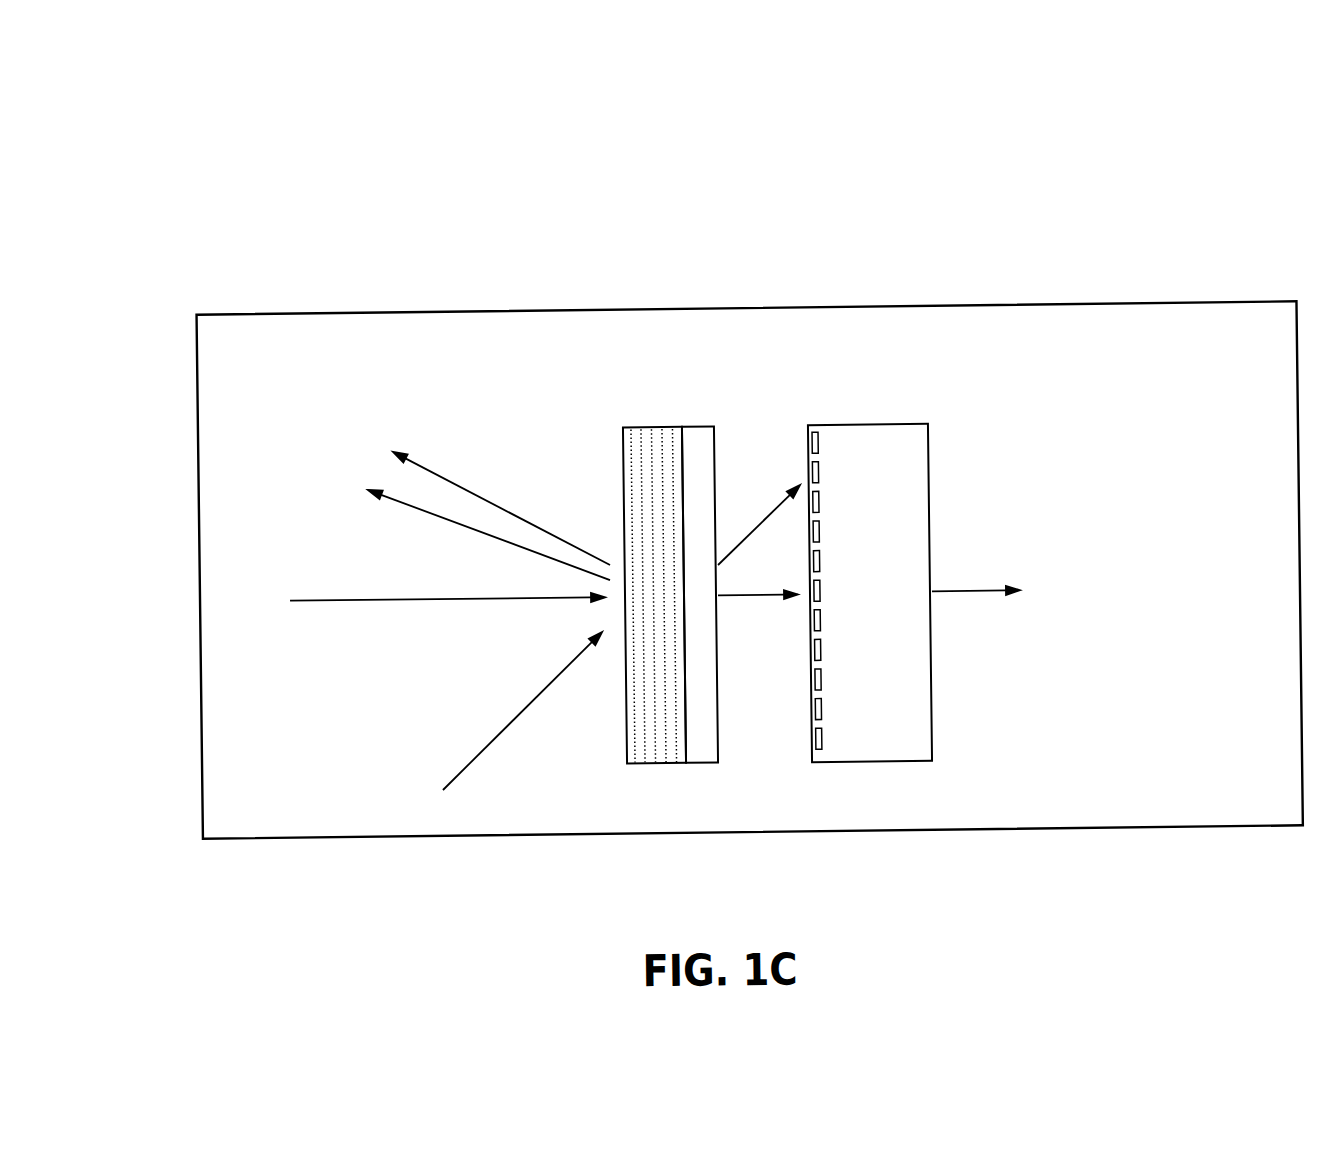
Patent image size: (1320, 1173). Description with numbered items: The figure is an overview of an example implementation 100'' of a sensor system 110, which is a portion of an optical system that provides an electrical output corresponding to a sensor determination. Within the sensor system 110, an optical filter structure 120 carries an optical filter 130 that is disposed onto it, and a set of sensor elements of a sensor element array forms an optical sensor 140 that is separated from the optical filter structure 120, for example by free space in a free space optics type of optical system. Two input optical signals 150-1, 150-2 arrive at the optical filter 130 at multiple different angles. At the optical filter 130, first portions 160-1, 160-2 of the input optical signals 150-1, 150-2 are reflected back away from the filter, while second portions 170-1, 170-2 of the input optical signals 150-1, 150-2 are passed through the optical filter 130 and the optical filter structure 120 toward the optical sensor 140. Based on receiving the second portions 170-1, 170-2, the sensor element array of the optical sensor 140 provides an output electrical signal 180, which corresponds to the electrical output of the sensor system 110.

The example implementation 100'' is at (701, 447).
The sensor system 110 is at (757, 309).
The optical filter structure 120 is at (708, 427).
The optical filter 130 is at (656, 763).
The optical sensor 140 is at (871, 427).
The input optical signal 150-1 is at (384, 627).
The input optical signal 150-2 is at (350, 718).
The first portion of input optical signal 160-1 is at (564, 408).
The first portion of input optical signal 160-2 is at (501, 477).
The second portion of input optical signal 170-1 is at (751, 618).
The second portion of input optical signal 170-2 is at (787, 704).
The output electrical signal 180 is at (1020, 524).